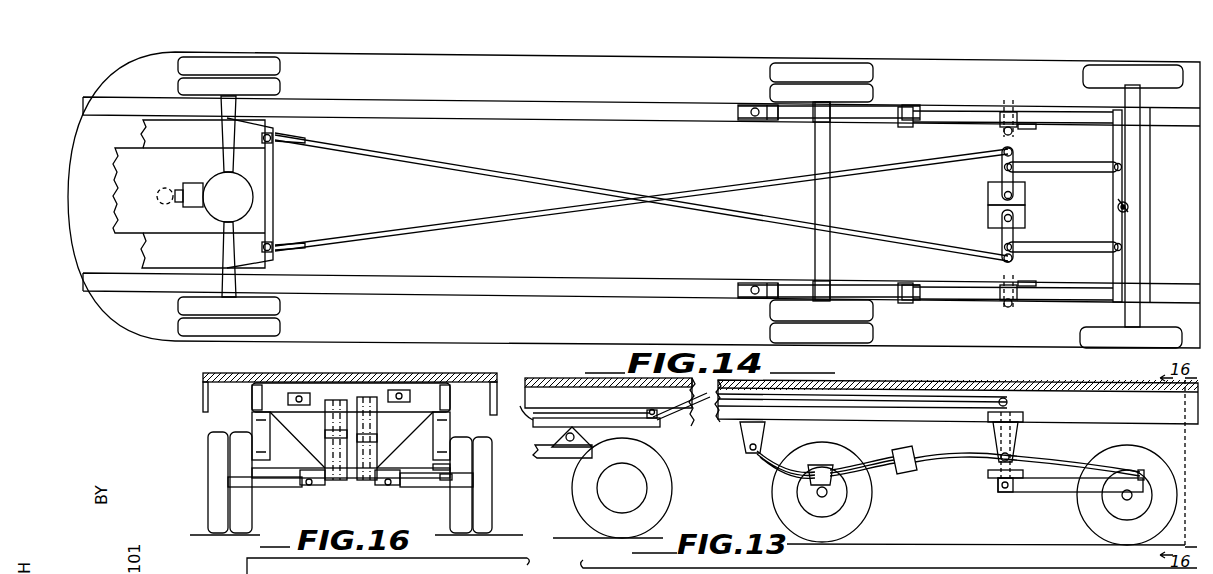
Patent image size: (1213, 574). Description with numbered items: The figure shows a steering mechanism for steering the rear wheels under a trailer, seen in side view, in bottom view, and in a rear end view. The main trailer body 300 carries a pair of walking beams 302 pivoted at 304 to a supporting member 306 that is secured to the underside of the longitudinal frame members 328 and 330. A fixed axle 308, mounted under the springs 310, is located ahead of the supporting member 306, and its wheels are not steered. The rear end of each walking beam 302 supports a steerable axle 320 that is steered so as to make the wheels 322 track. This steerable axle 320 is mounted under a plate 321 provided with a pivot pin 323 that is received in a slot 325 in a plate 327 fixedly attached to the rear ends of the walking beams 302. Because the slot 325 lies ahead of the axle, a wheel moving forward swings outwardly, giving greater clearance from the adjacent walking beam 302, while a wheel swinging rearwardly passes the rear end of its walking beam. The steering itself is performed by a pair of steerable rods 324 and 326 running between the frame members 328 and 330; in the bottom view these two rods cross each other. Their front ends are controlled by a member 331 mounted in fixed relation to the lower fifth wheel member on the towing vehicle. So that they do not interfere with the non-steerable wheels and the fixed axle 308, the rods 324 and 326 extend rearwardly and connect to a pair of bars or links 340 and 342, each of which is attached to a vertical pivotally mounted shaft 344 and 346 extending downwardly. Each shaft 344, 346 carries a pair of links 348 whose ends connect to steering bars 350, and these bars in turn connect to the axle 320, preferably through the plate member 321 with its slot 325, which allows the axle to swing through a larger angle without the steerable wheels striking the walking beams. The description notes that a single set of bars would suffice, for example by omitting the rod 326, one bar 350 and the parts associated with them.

In FIG. 14, the main trailer body 300 is at (484, 59).
In FIG. 16, the main trailer body 300 is at (483, 378).
In FIG. 13, the main trailer body 300 is at (1087, 400).
In FIG. 14, the walking beam 302 is at (955, 115).
In FIG. 13, the walking beam 302 is at (933, 458).
In FIG. 14, the pivot 304 is at (1010, 107).
In FIG. 13, the pivot 304 is at (1003, 462).
In FIG. 14, the supporting member 306 is at (1027, 128).
In FIG. 16, the supporting member 306 is at (253, 390).
In FIG. 13, the supporting member 306 is at (1017, 433).
In FIG. 14, the fixed axle 308 is at (820, 143).
In FIG. 13, the fixed axle 308 is at (865, 498).
In FIG. 14, the springs 310 is at (851, 115).
In FIG. 13, the springs 310 is at (867, 462).
In FIG. 14, the steerable axle 320 is at (1132, 275).
In FIG. 16, the steerable axle 320 is at (267, 483).
In FIG. 13, the steerable axle 320 is at (1073, 497).
In FIG. 14, the plate 321 is at (1145, 248).
In FIG. 16, the plate 321 is at (450, 477).
In FIG. 13, the plate 321 is at (1143, 482).
In FIG. 14, the wheels 322 is at (1095, 78).
In FIG. 13, the wheels 322 is at (1133, 458).
In FIG. 14, the pivot pin 323 is at (1130, 208).
In FIG. 14, the steerable rod 324 is at (535, 175).
In FIG. 16, the steerable rod 324 is at (300, 393).
In FIG. 14, the slot 325 is at (1123, 203).
In FIG. 14, the steerable rod 326 is at (530, 214).
In FIG. 16, the steerable rod 326 is at (407, 392).
In FIG. 16, the plate 327 is at (440, 470).
In FIG. 13, the plate 327 is at (1142, 482).
In FIG. 14, the longitudinal frame member 328 is at (567, 106).
In FIG. 14, the longitudinal frame member 330 is at (584, 285).
In FIG. 14, the member 331 is at (270, 200).
In FIG. 14, the link 340 is at (1003, 250).
In FIG. 16, the link 340 is at (323, 400).
In FIG. 14, the link 342 is at (1002, 158).
In FIG. 16, the link 342 is at (383, 397).
In FIG. 14, the vertical pivotally mounted shaft 344 is at (1005, 218).
In FIG. 16, the vertical pivotally mounted shaft 344 is at (333, 433).
In FIG. 14, the vertical pivotally mounted shaft 346 is at (1005, 192).
In FIG. 16, the vertical pivotally mounted shaft 346 is at (362, 438).
In FIG. 16, the links 348 is at (320, 480).
In FIG. 14, the steering bar 350 is at (1060, 168).
In FIG. 16, the steering bar 350 is at (308, 478).